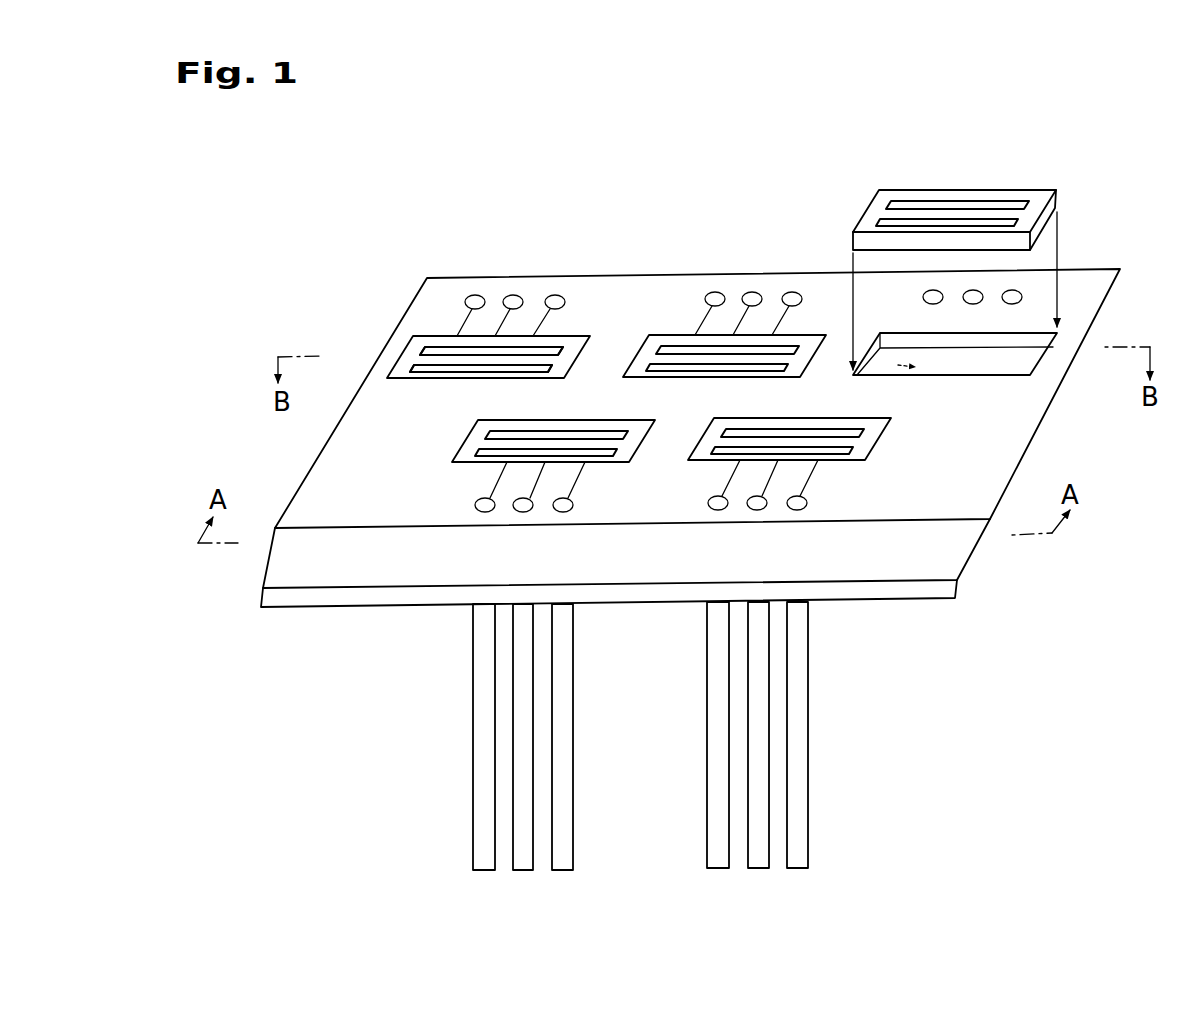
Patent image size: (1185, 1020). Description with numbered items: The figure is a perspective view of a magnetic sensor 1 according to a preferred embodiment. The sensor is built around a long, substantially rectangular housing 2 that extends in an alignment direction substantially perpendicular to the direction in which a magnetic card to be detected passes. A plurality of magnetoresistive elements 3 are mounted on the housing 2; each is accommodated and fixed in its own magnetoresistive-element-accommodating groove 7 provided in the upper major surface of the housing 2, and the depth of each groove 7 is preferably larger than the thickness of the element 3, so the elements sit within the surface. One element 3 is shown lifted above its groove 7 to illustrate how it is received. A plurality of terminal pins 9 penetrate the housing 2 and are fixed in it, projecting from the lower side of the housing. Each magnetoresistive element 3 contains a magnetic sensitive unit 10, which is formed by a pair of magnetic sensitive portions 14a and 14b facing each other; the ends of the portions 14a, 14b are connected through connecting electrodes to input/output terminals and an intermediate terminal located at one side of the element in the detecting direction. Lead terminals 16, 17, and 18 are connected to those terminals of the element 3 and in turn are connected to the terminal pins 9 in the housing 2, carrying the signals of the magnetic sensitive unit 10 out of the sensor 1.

The magnetic sensor 1 is at (405, 258).
The housing 2 is at (372, 577).
The magnetoresistive element 3 is at (432, 385).
The magnetoresistive-element-accommodating groove 7 is at (973, 363).
The terminal pin 9 is at (474, 295).
The magnetic sensitive unit 10 is at (342, 273).
The magnetic sensitive portion 14a is at (434, 349).
The magnetic sensitive portion 14b is at (416, 368).
The lead terminal 16 is at (1028, 150).
The lead terminal 17 is at (948, 152).
The lead terminal 18 is at (990, 148).